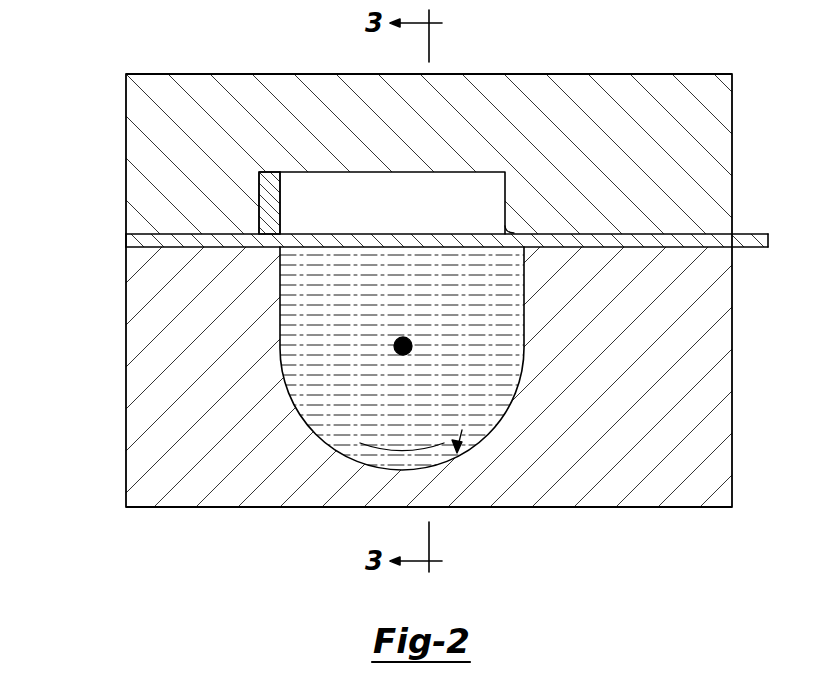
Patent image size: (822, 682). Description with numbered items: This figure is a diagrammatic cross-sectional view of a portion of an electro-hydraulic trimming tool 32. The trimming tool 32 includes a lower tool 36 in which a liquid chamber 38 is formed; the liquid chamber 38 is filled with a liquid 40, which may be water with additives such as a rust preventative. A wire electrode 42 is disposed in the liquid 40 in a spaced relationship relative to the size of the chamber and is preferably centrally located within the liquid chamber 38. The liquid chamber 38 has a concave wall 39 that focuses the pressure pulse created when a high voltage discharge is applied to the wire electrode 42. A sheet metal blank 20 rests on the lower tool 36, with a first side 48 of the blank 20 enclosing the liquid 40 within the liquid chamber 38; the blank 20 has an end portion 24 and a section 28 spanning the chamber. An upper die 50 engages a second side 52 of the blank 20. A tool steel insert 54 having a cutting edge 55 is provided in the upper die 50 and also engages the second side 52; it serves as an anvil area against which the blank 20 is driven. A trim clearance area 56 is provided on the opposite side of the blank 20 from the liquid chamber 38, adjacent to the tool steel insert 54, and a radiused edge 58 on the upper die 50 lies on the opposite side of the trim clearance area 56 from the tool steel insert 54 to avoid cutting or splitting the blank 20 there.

The blank 20 is at (122, 238).
The first end of plate 24 is at (151, 241).
The plate section 28 is at (403, 240).
The trimming tool 32 is at (84, 156).
The lower tool 36 is at (138, 392).
The liquid chamber 38 is at (463, 432).
The concave wall 39 is at (402, 468).
The liquid 40 is at (500, 366).
The wire electrode 42 is at (403, 335).
The first side 48 is at (750, 247).
The upper die 50 is at (717, 151).
The second side 52 is at (750, 234).
The tool steel insert 54 is at (280, 192).
The cutting edge 55 is at (281, 232).
The trim clearance area 56 is at (352, 185).
The radiused edge 58 is at (520, 232).